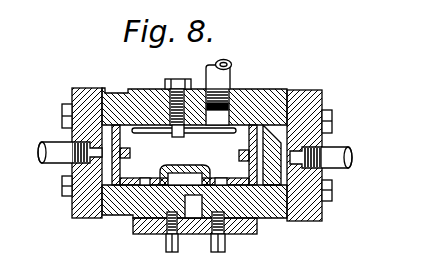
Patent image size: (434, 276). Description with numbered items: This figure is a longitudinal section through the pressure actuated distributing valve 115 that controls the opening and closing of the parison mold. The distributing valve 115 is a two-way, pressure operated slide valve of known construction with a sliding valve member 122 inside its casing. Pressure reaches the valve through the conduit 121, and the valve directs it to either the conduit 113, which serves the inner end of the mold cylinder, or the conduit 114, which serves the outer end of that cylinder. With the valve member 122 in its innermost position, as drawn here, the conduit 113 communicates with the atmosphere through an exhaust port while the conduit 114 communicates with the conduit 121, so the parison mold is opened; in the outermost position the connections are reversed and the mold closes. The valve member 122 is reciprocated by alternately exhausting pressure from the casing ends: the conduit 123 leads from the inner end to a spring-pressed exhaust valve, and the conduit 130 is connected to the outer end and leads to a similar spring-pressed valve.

The conduit 113 is at (165, 245).
The conduit 114 is at (226, 243).
The distributing valve 115 is at (226, 96).
The conduit 121 is at (232, 65).
The sliding valve member 122 is at (324, 97).
The conduit 123 is at (47, 164).
The conduit 130 is at (333, 152).